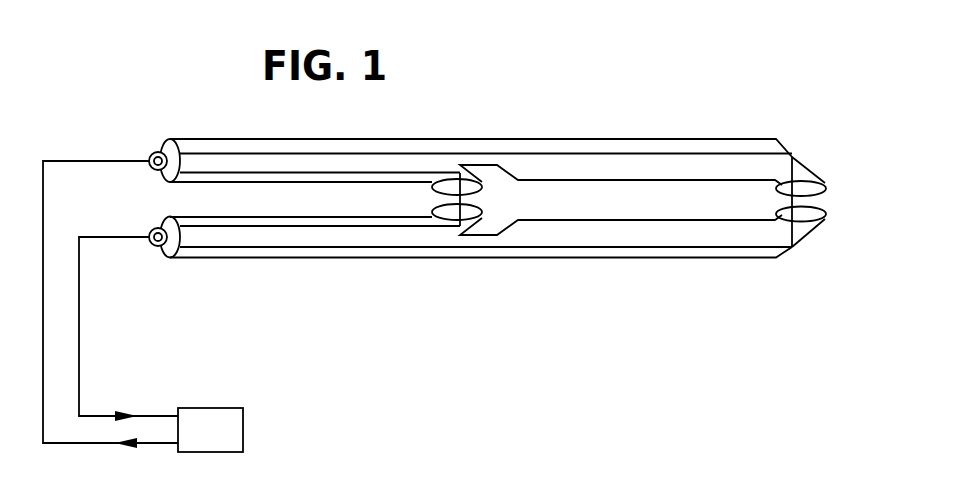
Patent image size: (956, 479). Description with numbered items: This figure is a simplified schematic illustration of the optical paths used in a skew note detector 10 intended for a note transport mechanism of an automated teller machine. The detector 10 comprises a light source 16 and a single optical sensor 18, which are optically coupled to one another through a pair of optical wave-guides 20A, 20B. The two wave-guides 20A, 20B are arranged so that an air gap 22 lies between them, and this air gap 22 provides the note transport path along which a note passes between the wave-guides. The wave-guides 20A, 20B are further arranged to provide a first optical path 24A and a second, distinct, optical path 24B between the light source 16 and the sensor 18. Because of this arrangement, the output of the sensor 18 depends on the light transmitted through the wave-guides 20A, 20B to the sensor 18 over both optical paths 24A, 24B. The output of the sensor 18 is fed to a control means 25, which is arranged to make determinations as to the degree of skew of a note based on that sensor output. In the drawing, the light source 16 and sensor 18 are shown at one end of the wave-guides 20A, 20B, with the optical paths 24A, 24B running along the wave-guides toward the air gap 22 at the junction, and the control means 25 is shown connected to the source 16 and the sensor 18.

The skew note detector 10 is at (715, 78).
The light source 16 is at (152, 152).
The optical sensor 18 is at (151, 246).
The optical wave-guide 20A is at (480, 147).
The optical wave-guide 20B is at (505, 252).
The air gap 22 is at (745, 200).
The first optical path 24A is at (358, 170).
The second optical path 24B is at (795, 170).
The control means 25 is at (210, 430).